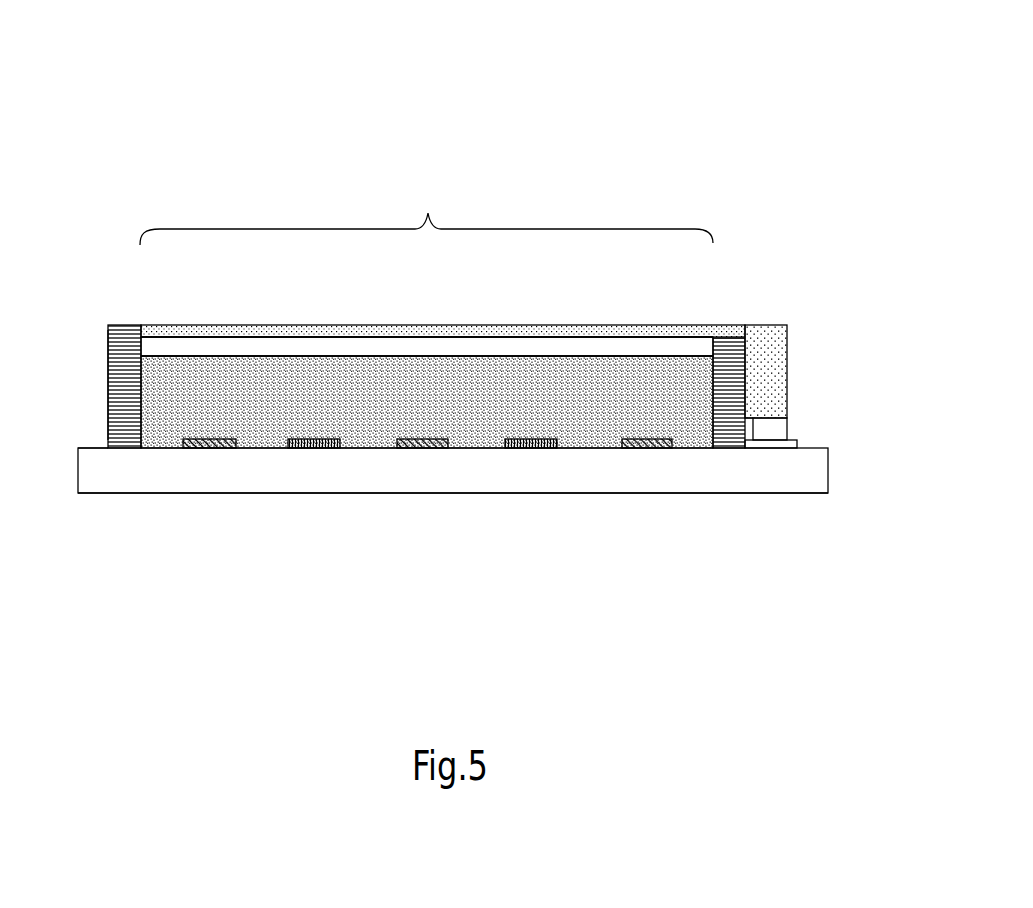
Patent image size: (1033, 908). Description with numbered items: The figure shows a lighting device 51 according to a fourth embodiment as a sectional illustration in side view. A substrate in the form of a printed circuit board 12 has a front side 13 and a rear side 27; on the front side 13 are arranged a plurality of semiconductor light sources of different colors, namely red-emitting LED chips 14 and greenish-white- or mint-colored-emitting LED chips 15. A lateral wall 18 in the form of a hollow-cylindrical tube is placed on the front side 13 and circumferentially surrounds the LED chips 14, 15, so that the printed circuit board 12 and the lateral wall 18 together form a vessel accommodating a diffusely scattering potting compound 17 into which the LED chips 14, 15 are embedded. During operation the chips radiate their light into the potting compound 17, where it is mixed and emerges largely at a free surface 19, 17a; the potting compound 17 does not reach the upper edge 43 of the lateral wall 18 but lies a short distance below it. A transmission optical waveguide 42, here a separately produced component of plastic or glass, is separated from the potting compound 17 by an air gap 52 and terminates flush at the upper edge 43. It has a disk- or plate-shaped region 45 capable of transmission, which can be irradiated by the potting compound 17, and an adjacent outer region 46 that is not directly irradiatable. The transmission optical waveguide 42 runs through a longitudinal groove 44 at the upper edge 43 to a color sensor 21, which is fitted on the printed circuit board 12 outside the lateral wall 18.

The lighting device 51 is at (630, 122).
The region capable of transmission 45 is at (426, 215).
The upper edge 43 is at (122, 325).
The longitudinal groove 44 is at (725, 339).
The transmission optical waveguide 42 is at (378, 333).
The potting compound 17 is at (185, 361).
The surface of filling material 17a is at (291, 355).
The free surface 19 is at (427, 310).
The air gap 52 is at (498, 349).
The red-emitting LED chips 14 is at (212, 440).
The greenish-white- or mint-colored-emitting LED chips 15 is at (317, 440).
The lateral wall 18 is at (108, 353).
The front side 13 is at (92, 447).
The printed circuit board 12 is at (148, 486).
The rear side 27 is at (109, 494).
The outer region 46 is at (775, 378).
The color sensor 21 is at (776, 428).